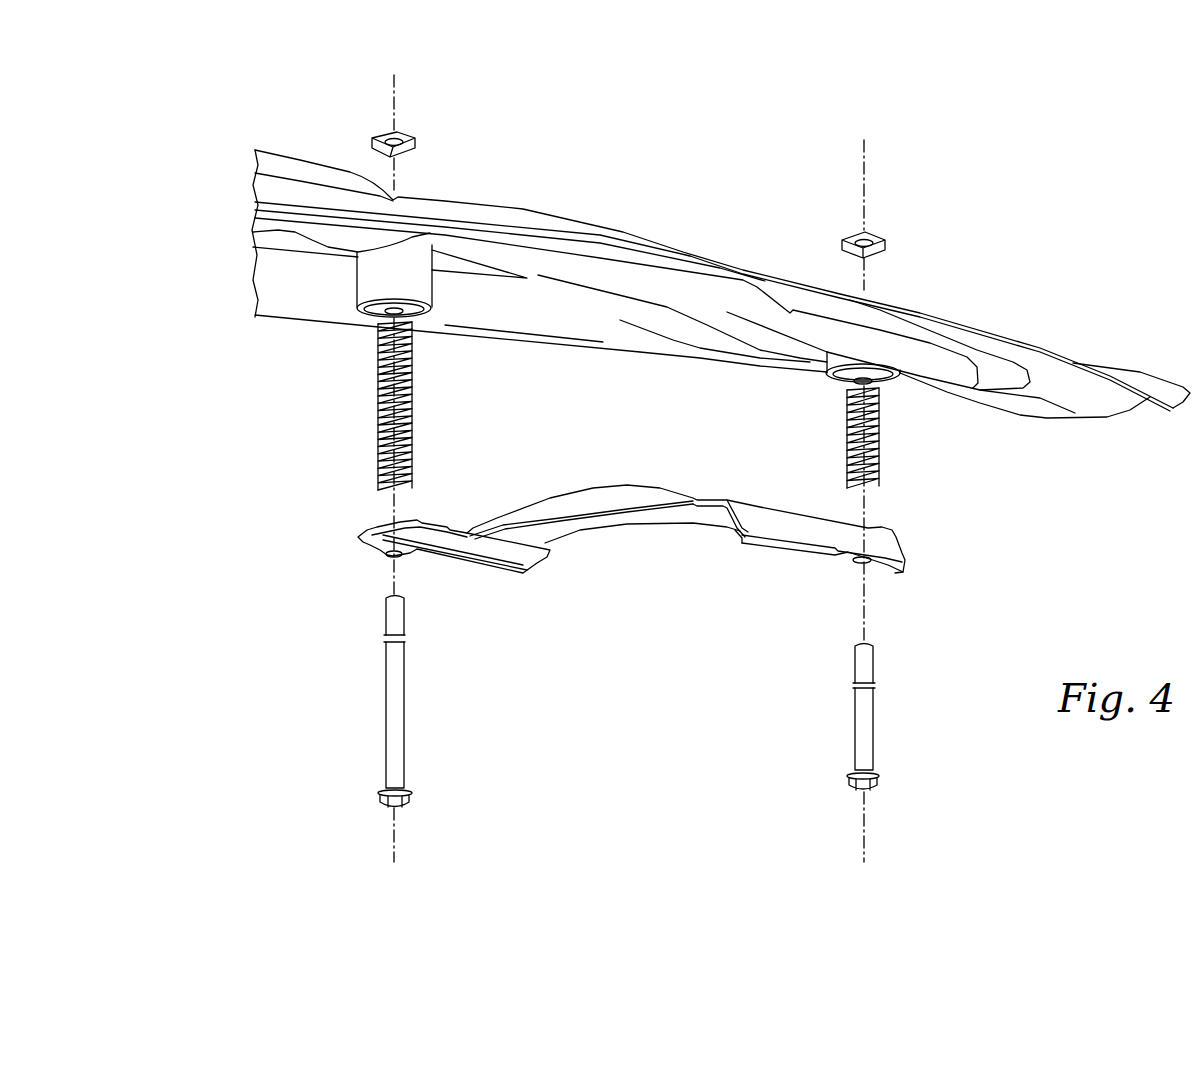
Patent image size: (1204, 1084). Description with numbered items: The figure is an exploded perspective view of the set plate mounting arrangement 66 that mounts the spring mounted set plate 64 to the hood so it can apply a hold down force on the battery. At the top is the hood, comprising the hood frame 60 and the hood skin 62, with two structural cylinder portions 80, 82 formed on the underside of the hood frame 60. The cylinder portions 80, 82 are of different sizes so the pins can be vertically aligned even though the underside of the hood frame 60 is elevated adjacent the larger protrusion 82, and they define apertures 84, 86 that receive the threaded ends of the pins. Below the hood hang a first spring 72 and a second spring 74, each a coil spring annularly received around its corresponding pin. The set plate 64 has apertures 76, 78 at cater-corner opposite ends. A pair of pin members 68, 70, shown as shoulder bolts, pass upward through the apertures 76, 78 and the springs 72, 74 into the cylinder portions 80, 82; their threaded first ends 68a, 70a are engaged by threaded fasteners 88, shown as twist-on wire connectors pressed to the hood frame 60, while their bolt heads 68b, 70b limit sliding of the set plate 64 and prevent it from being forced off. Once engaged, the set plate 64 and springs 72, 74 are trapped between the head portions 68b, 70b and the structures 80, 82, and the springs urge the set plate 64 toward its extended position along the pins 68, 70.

The hood frame 60 is at (988, 334).
The hood skin 62 is at (972, 564).
The set plate 64 is at (618, 524).
The set plate mounting arrangement 66 is at (268, 565).
The first pin member 68 is at (872, 728).
The first end of first pin 68a is at (866, 652).
The second end of first pin 68b is at (873, 788).
The second pin member 70 is at (392, 725).
The first end of second pin 70a is at (399, 605).
The second end of second pin 70b is at (403, 807).
The first spring 72 is at (880, 443).
The second spring 74 is at (413, 392).
The aperture 76 is at (387, 559).
The aperture 78 is at (860, 567).
The structural cylinder portion 80 is at (830, 366).
The structural cylinder portion 82 is at (370, 282).
The aperture 84 is at (380, 314).
The aperture 86 is at (854, 390).
The fastener 88 is at (407, 135).